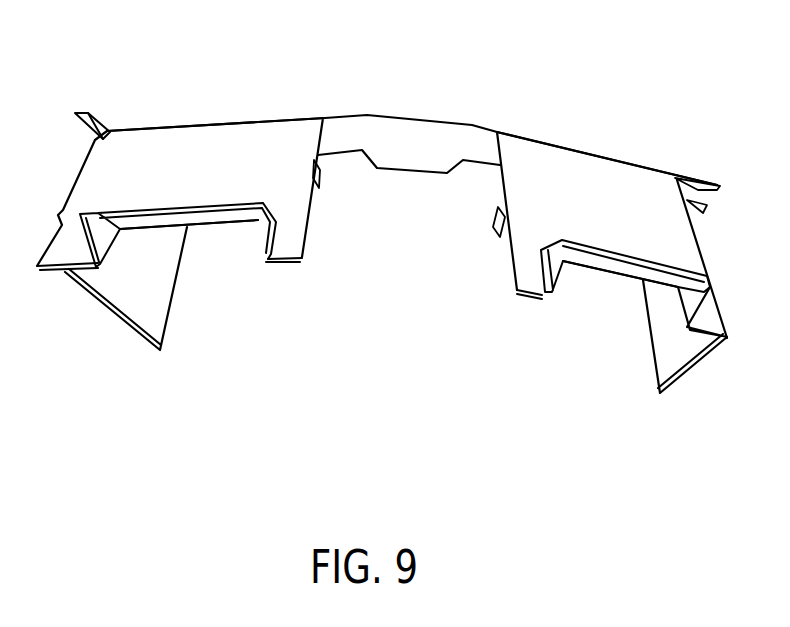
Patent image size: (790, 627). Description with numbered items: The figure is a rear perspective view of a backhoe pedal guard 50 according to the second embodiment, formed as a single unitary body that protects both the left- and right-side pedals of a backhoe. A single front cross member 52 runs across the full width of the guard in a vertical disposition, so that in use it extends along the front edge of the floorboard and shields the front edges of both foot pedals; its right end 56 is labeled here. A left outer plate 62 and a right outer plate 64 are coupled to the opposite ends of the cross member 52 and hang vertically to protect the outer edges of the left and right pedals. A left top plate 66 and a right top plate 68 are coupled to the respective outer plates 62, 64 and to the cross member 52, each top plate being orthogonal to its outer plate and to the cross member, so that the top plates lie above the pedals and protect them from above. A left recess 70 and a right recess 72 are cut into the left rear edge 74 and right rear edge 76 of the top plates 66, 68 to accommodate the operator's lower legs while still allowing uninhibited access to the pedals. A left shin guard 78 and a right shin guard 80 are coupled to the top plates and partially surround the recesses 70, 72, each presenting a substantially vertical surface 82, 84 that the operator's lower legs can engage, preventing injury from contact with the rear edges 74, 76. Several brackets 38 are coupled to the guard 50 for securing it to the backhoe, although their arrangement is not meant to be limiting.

The backhoe pedal guard 50 is at (262, 64).
The front cross member 52 is at (427, 140).
The right end 56 is at (719, 188).
The brackets 38 is at (100, 131).
The left outer plate 62 is at (117, 300).
The right outer plate 64 is at (678, 358).
The left top plate 66 is at (152, 140).
The right top plate 68 is at (623, 180).
The left recess 70 is at (242, 234).
The right recess 72 is at (605, 279).
The left rear edge 74 is at (288, 250).
The right rear edge 76 is at (532, 293).
The left shin guard 78 is at (130, 213).
The right shin guard 80 is at (652, 265).
The substantially vertical surface 82 is at (196, 222).
The substantially vertical surface 84 is at (590, 257).